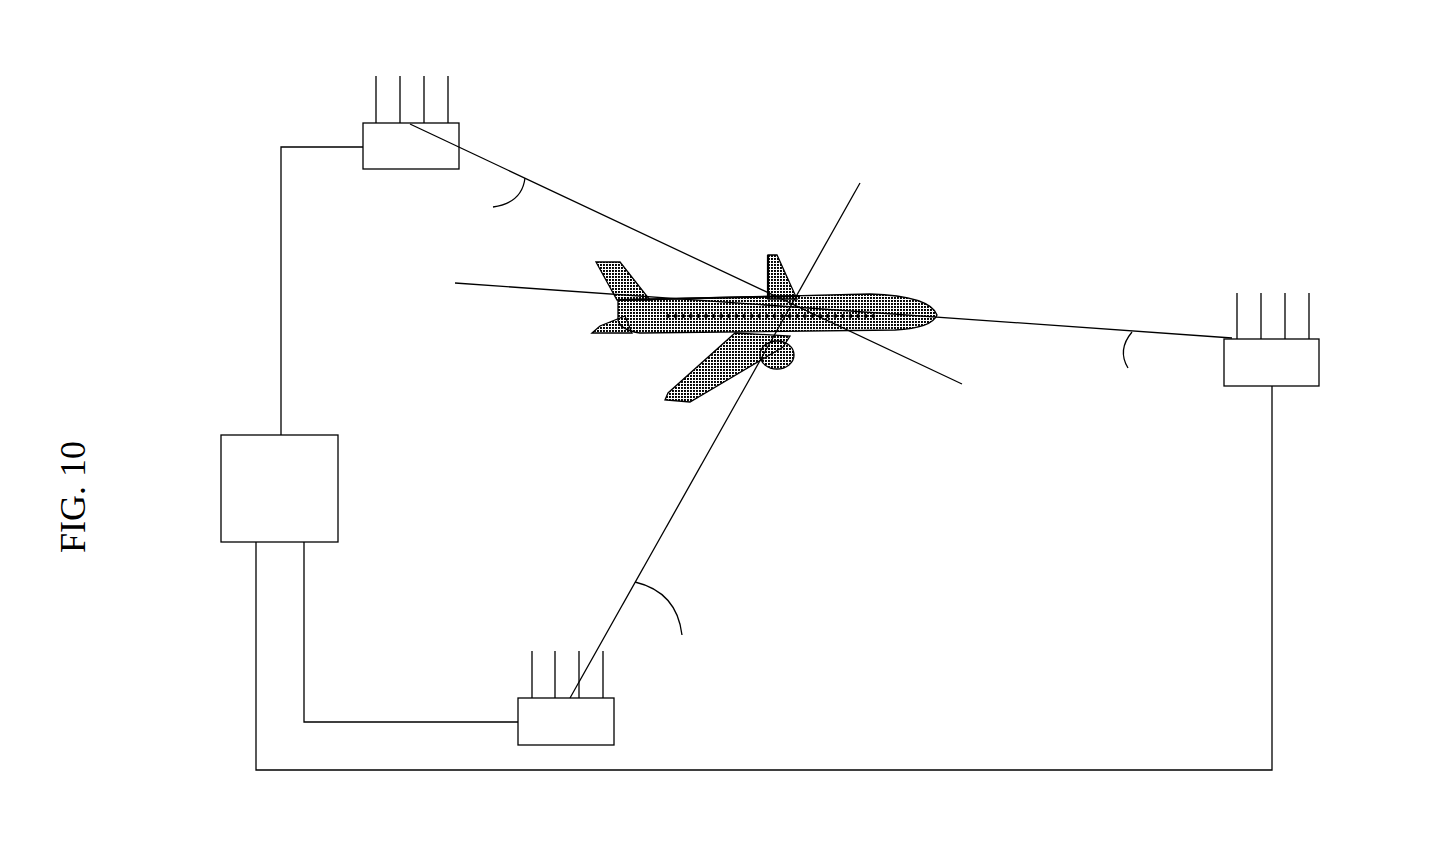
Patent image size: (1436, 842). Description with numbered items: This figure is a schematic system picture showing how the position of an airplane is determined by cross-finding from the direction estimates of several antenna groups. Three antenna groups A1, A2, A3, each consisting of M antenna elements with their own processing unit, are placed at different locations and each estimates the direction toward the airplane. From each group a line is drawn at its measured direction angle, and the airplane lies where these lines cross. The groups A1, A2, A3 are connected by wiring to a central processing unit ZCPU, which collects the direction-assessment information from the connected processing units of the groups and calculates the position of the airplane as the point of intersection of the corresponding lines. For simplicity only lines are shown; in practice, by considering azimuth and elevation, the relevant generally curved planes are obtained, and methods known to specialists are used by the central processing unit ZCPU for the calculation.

The antenna group A1 is at (376, 147).
The antenna group A2 is at (1285, 352).
The antenna group A3 is at (532, 722).
The central processing unit ZCPU is at (267, 457).